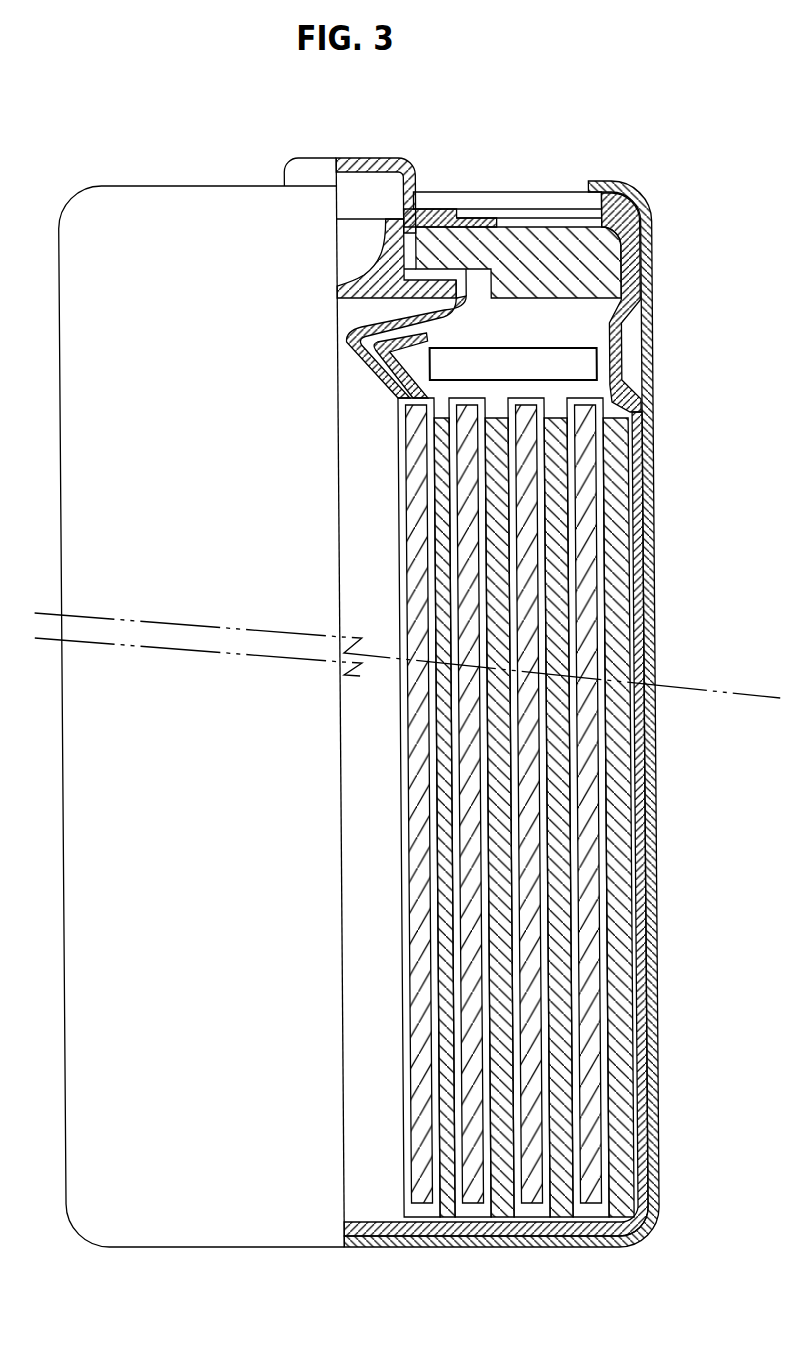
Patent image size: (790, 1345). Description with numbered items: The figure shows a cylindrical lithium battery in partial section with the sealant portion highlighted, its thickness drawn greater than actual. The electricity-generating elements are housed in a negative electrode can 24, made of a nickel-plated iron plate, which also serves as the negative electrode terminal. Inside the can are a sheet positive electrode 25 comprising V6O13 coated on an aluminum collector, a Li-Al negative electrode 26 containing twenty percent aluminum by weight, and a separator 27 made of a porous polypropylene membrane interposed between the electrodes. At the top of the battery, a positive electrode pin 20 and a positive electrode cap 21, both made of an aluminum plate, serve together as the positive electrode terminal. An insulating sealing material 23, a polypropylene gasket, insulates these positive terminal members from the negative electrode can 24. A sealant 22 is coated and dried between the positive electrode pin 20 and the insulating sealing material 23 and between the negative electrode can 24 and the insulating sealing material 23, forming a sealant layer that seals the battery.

The positive electrode pin 20 is at (201, 716).
The positive electrode cap 21 is at (398, 158).
The sealant 22 is at (432, 213).
The insulating sealing material 23 is at (537, 247).
The negative electrode can 24 is at (655, 478).
The positive electrode 25 is at (586, 549).
The negative electrode 26 is at (619, 809).
The separator 27 is at (569, 931).